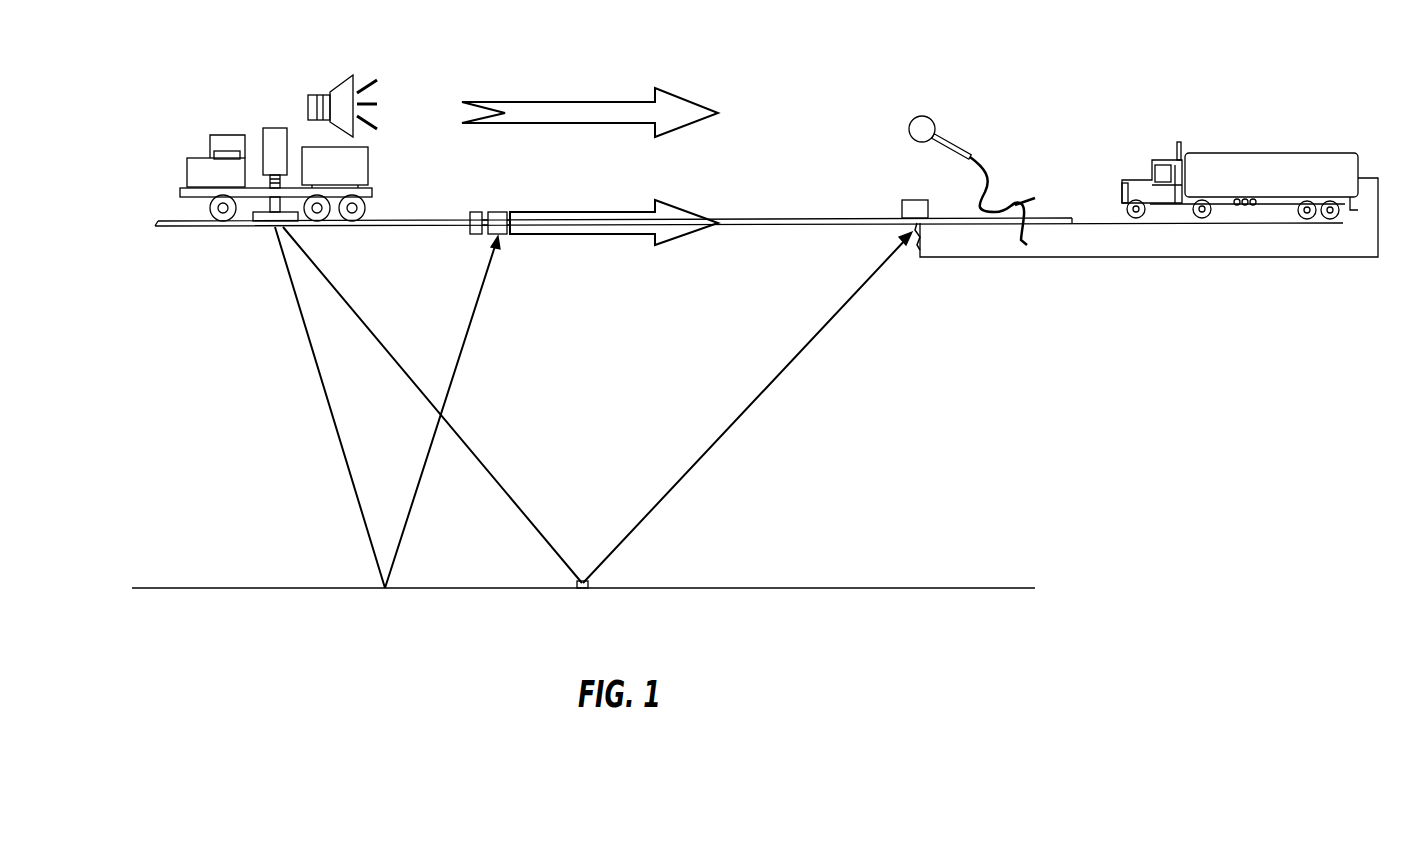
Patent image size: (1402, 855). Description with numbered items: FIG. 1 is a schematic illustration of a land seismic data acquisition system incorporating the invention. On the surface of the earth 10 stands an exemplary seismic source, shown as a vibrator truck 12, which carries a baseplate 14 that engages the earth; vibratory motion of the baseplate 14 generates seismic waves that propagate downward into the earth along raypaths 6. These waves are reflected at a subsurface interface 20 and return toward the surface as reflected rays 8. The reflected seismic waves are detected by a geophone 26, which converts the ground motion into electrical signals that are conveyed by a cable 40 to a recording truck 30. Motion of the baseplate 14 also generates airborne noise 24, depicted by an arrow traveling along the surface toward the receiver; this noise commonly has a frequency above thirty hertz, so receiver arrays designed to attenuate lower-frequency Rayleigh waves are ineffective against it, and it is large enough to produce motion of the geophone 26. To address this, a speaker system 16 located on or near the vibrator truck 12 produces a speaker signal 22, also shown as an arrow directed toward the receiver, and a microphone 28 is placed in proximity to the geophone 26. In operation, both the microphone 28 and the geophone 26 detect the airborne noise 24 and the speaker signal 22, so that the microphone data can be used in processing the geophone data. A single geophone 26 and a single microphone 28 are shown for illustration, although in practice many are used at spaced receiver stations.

The raypaths 6 is at (368, 332).
The reflected rays 8 is at (460, 357).
The surface of the earth 10 is at (163, 228).
The vibrator truck 12 is at (164, 159).
The baseplate 14 is at (275, 218).
The speaker system 16 is at (333, 92).
The interface 20 is at (952, 588).
The speaker signal 22 is at (575, 98).
The airborne noise 24 is at (580, 208).
The geophone 26 is at (908, 198).
The microphone 28 is at (918, 117).
The recording truck 30 is at (1285, 153).
The cable 40 is at (1118, 265).